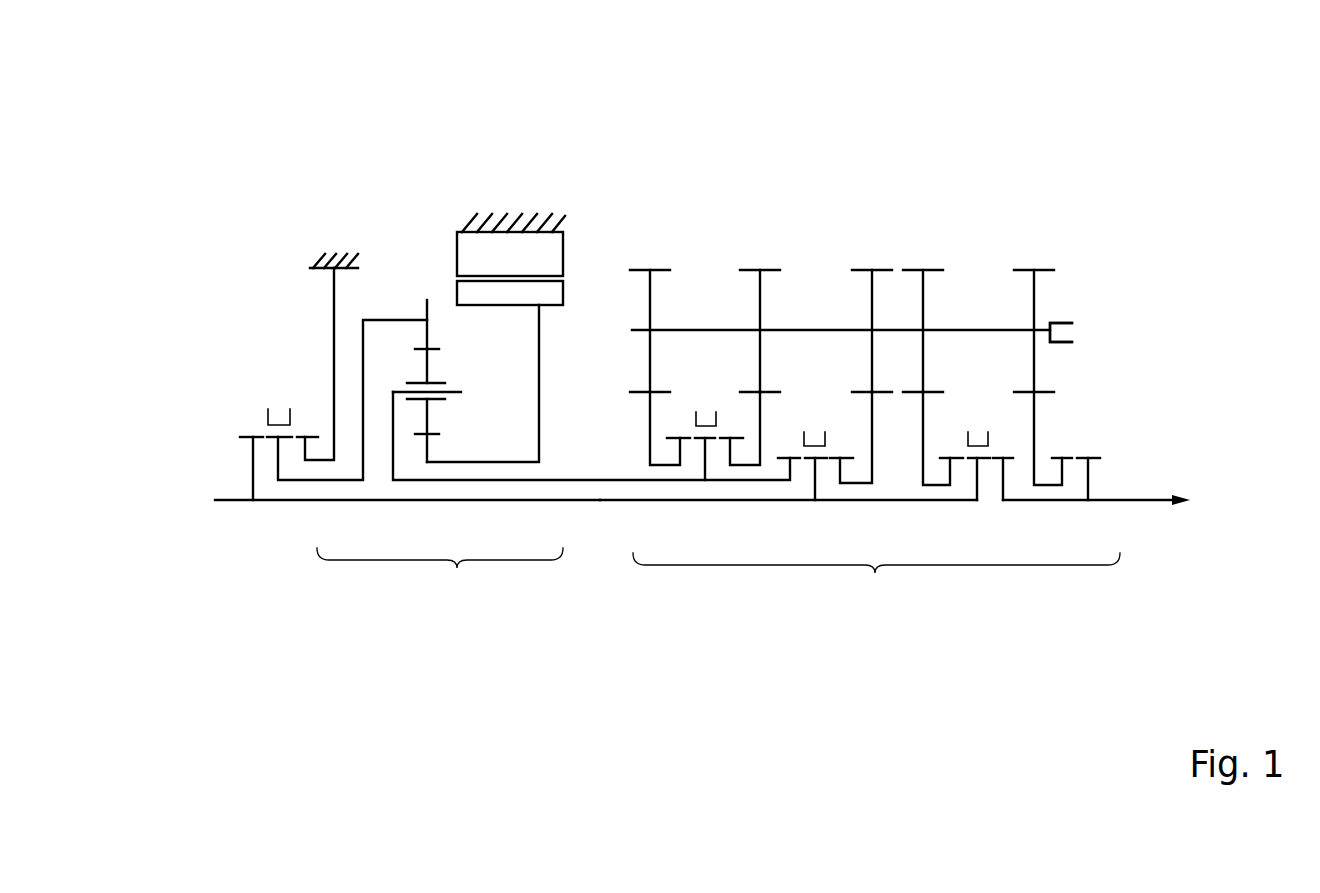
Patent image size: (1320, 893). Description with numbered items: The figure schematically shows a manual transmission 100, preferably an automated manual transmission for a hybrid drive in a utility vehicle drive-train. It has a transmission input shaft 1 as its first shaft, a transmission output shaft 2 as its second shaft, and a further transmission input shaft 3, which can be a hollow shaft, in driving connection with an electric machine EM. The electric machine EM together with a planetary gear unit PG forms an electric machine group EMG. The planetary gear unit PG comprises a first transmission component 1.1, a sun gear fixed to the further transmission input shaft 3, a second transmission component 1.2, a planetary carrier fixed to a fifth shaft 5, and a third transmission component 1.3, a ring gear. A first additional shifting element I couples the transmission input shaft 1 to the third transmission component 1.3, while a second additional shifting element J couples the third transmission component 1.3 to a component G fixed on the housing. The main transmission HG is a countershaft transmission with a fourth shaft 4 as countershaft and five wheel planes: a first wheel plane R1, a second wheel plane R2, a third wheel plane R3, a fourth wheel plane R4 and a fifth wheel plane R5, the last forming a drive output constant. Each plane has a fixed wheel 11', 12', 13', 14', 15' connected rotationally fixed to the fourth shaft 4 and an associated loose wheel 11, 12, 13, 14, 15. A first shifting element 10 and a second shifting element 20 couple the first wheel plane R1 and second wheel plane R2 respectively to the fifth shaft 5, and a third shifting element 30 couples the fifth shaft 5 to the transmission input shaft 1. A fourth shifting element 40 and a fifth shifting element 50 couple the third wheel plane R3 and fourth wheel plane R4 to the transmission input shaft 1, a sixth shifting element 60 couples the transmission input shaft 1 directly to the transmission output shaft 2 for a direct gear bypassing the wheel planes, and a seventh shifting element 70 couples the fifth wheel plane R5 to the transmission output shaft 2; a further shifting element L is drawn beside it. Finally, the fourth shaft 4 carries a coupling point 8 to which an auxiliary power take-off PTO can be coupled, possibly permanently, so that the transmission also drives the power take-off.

The manual transmission 100 is at (260, 138).
The component fixed on the housing G is at (336, 248).
The third transmission component 1.3 is at (425, 337).
The electric machine EM is at (481, 183).
The planetary gear unit PG is at (427, 294).
The second transmission component 1.2 is at (395, 461).
The first transmission component 1.1 is at (413, 468).
The further transmission input shaft 3 is at (495, 463).
The transmission input shaft 1 is at (232, 503).
The first additional shifting element I is at (266, 419).
The second additional shifting element J is at (315, 364).
The electric machine group EMG is at (457, 568).
The fourth shaft 4 is at (707, 328).
The coupling point 8 is at (1058, 322).
The auxiliary power take-off PTO is at (1086, 334).
The first wheel plane R1 is at (651, 250).
The second wheel plane R2 is at (762, 250).
The third wheel plane R3 is at (872, 250).
The fourth wheel plane R4 is at (923, 250).
The fifth wheel plane R5 is at (1034, 250).
The fixed wheel 11' is at (640, 212).
The fixed wheel 12' is at (792, 212).
The fixed wheel 13' is at (883, 212).
The fixed wheel 14' is at (943, 212).
The fixed wheel 15' is at (1066, 212).
The loose wheel 11 is at (648, 517).
The loose wheel 12 is at (757, 517).
The loose wheel 13 is at (855, 517).
The loose wheel 14 is at (923, 517).
The loose wheel 15 is at (1042, 517).
The fifth shaft 5 is at (668, 503).
The transmission output shaft 2 is at (1150, 502).
The first shifting element 10 is at (691, 443).
The second shifting element 20 is at (731, 422).
The third shifting element 30 is at (802, 463).
The fourth shifting element 40 is at (842, 442).
The fifth shifting element 50 is at (964, 463).
The sixth shifting element 60 is at (1005, 463).
The seventh shifting element 70 is at (1063, 442).
The shift element L is at (1088, 463).
The main transmission HG is at (875, 573).